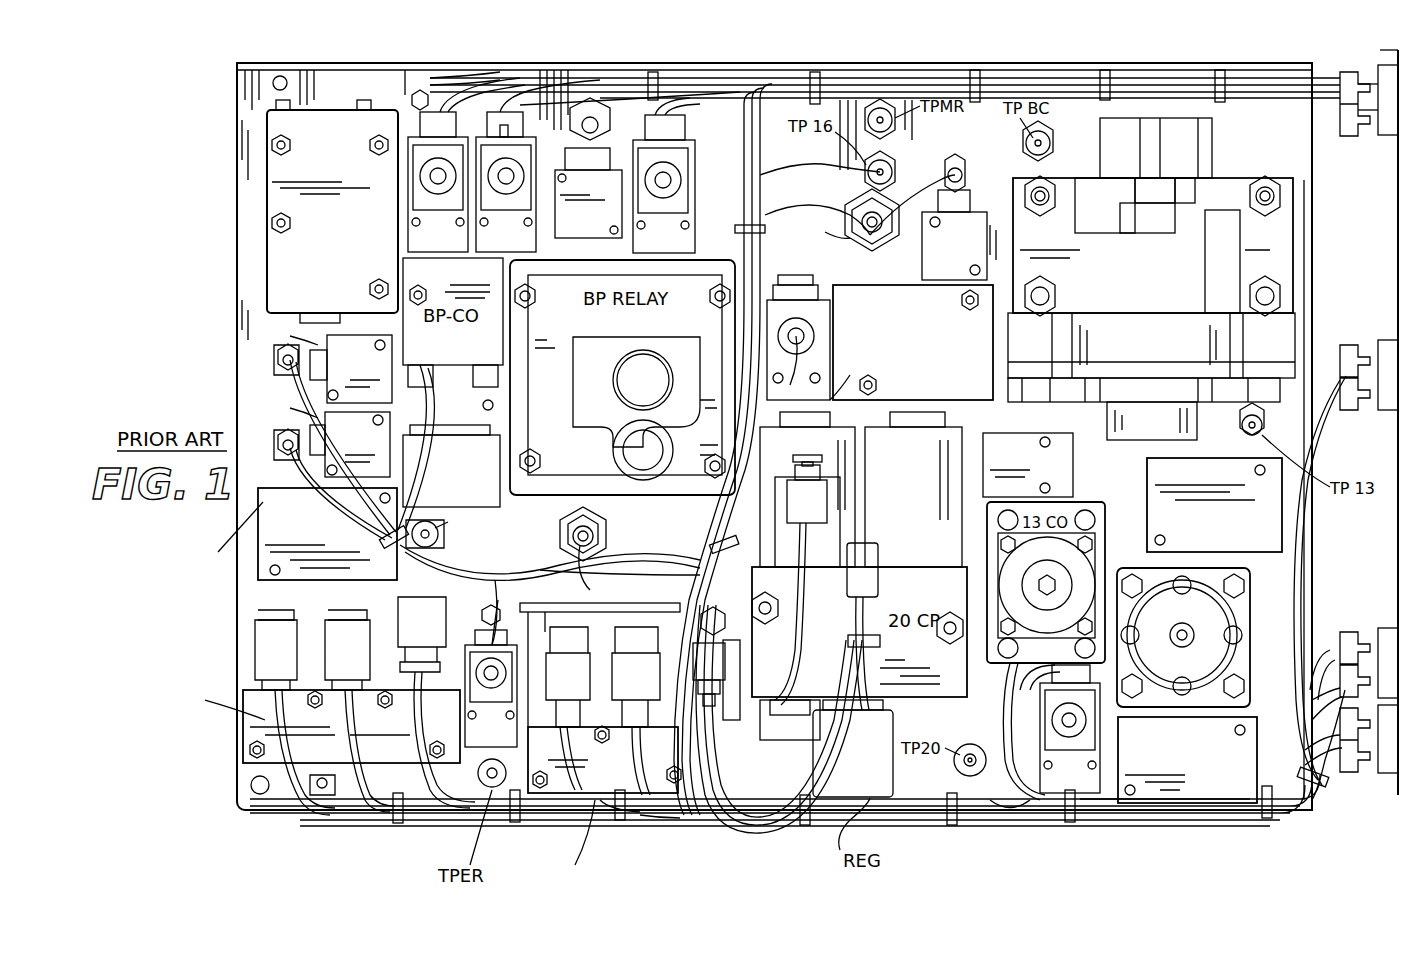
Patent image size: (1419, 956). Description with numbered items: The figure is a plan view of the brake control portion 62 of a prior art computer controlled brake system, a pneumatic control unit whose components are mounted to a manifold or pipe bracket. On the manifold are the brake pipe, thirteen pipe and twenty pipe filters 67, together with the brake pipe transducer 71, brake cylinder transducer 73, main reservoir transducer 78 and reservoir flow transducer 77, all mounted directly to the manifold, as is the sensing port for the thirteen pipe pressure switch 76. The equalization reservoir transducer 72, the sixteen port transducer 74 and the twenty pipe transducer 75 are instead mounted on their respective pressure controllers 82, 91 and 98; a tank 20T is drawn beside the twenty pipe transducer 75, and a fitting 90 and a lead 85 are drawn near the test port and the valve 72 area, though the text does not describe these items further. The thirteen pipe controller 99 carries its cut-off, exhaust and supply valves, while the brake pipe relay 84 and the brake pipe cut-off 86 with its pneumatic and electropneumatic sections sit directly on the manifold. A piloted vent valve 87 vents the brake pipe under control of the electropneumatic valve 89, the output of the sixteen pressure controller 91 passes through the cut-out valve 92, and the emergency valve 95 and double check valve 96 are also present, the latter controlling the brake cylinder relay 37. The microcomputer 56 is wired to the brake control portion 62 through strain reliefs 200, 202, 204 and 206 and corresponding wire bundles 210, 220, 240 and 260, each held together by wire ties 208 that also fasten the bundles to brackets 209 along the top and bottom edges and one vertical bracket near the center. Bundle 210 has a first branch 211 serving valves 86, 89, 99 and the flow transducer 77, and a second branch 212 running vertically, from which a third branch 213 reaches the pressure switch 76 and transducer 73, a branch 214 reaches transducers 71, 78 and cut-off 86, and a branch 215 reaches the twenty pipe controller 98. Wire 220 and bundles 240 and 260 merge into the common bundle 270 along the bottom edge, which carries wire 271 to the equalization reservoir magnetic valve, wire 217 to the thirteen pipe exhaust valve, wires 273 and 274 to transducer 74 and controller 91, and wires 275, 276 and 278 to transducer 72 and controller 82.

The brake control portion 62 is at (255, 54).
The microcomputer 56 is at (1398, 55).
The strain relief 200 is at (1342, 72).
The strain relief 202 is at (1350, 340).
The strain relief 204 is at (1358, 630).
The strain relief 206 is at (1355, 770).
The wire bundle 240 is at (1358, 640).
The wire bundle 260 is at (1318, 815).
The wire 220 is at (1340, 400).
The wire bundle 210 is at (1050, 75).
The first branch 211 is at (742, 80).
The bracket 209 is at (1230, 75).
The second branch 212 is at (760, 170).
The third branch 213 is at (790, 205).
The wire tie 208 is at (655, 72).
The piloted vent valve PVEM 87 is at (343, 166).
The electropneumatic valve MVEM 89 is at (455, 135).
The brake pipe cut-off 86 is at (522, 148).
The reservoir flow transducer 77 is at (582, 105).
The 13 pipe controller 99 is at (680, 162).
The brake pipe transducer 71 is at (362, 376).
The main reservoir transducer 78 is at (362, 446).
The filter 67 is at (288, 518).
The brake pipe relay 84 is at (467, 531).
The branch 214 is at (536, 578).
The wire 271 is at (492, 590).
The fitting 90 is at (598, 540).
The equalization reservoir pressure controller 82 is at (275, 760).
The wire 278 is at (313, 818).
The wire 276 is at (360, 815).
The wire 275 is at (400, 745).
The equalization reservoir transducer 72 is at (462, 656).
The tube 85 is at (485, 635).
The wire 274 is at (560, 800).
The 16 pressure controller 91 is at (595, 810).
The wire 273 is at (630, 800).
The 16 port transducer 74 is at (740, 672).
The 20 pipe pressure controller 98 is at (812, 700).
The branch 215 is at (790, 808).
The tank 20T is at (855, 488).
The 20 pipe transducer 75 is at (820, 518).
The cut-out valve MV16T 92 is at (800, 312).
The emergency valve PVE 95 is at (850, 300).
The 13 pipe pressure switch 76 is at (890, 245).
The brake cylinder transducer 73 is at (955, 165).
The brake cylinder relay 37 is at (1225, 225).
The double check valve DCV 96 is at (1068, 472).
The wire 217 is at (990, 815).
The common wire bundle 270 is at (1150, 825).